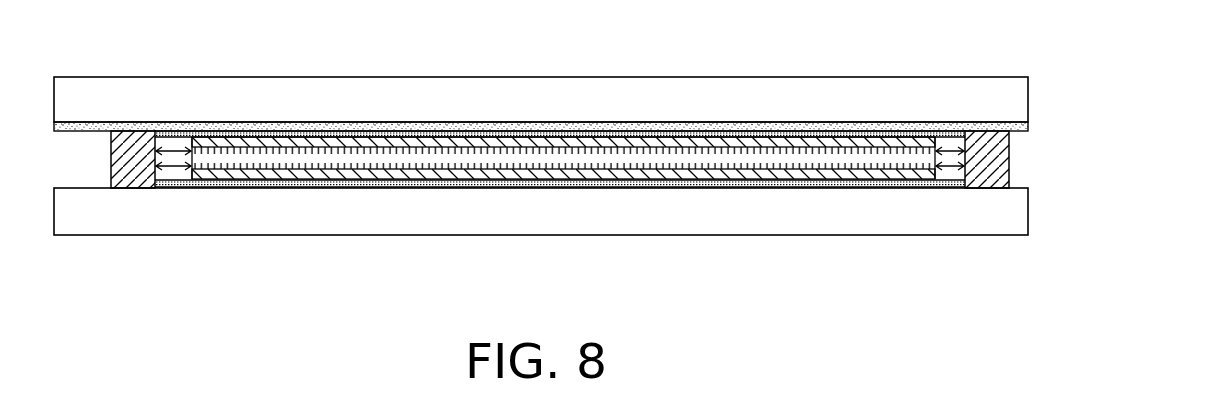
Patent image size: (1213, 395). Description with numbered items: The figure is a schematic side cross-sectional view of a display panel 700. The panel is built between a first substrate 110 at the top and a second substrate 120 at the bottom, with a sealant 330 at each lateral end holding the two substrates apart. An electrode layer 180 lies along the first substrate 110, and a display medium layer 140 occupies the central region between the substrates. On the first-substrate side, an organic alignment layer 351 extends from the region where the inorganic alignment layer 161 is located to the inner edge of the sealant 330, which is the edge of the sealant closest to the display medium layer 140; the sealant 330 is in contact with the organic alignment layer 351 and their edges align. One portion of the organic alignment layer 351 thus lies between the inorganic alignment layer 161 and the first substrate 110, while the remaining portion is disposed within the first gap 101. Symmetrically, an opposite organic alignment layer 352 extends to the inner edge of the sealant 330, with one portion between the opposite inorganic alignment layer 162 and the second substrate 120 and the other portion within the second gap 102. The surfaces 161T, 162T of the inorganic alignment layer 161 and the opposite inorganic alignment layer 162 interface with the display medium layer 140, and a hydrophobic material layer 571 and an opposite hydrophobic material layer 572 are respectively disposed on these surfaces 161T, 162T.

The display panel 700 is at (1194, 317).
The first substrate 110 is at (1012, 93).
The second substrate 120 is at (1015, 205).
The electrode layer 180 is at (1030, 125).
The sealant 330 is at (130, 188).
The organic alignment layer 351 is at (1010, 137).
The opposite organic alignment layer 352 is at (980, 190).
The inorganic alignment layer 161 is at (817, 145).
The surface of the inorganic alignment layer 161T is at (573, 152).
The opposite inorganic alignment layer 162 is at (863, 177).
The surface of the opposite inorganic alignment layer 162T is at (495, 172).
The display medium layer 140 is at (725, 160).
The first gap 101 is at (174, 150).
The second gap 102 is at (175, 158).
The hydrophobic material layer 571 is at (387, 152).
The opposite hydrophobic material layer 572 is at (363, 170).